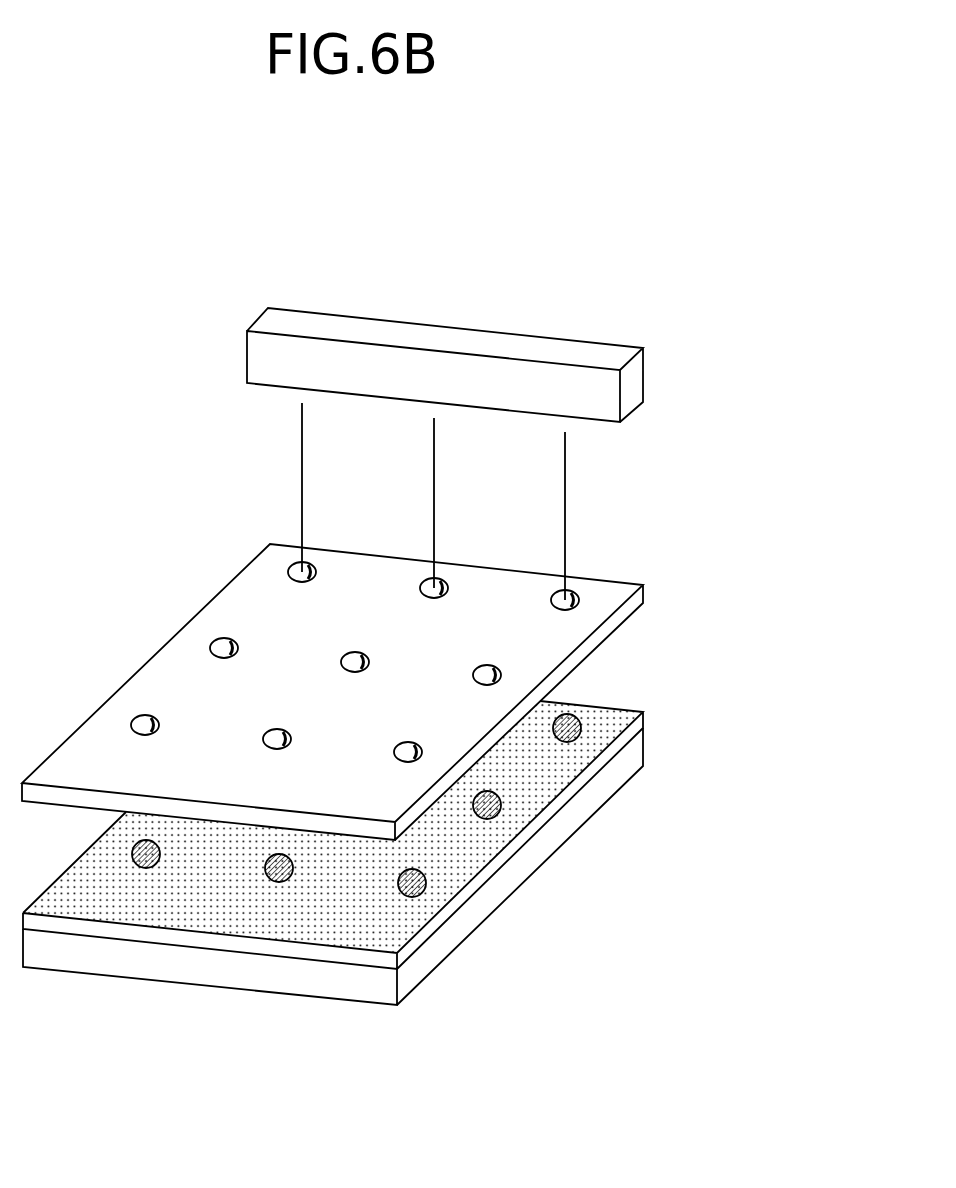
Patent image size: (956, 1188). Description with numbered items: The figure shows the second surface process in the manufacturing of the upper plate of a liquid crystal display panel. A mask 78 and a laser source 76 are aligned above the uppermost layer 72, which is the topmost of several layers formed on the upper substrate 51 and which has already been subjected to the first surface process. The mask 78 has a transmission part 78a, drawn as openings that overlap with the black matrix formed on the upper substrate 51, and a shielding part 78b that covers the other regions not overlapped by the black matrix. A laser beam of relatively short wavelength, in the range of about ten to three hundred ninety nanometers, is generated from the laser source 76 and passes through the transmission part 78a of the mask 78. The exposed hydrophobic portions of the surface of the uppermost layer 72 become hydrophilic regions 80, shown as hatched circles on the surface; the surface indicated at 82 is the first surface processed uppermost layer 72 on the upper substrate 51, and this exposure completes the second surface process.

The laser source 76 is at (645, 378).
The mask 78 is at (401, 692).
The transmission part 78a is at (580, 600).
The shielding part 78b is at (645, 584).
The deposition layer 82 is at (608, 707).
The uppermost layer 72 is at (368, 811).
The upper substrate 51 is at (645, 750).
The hydrophilic region 80 is at (580, 734).